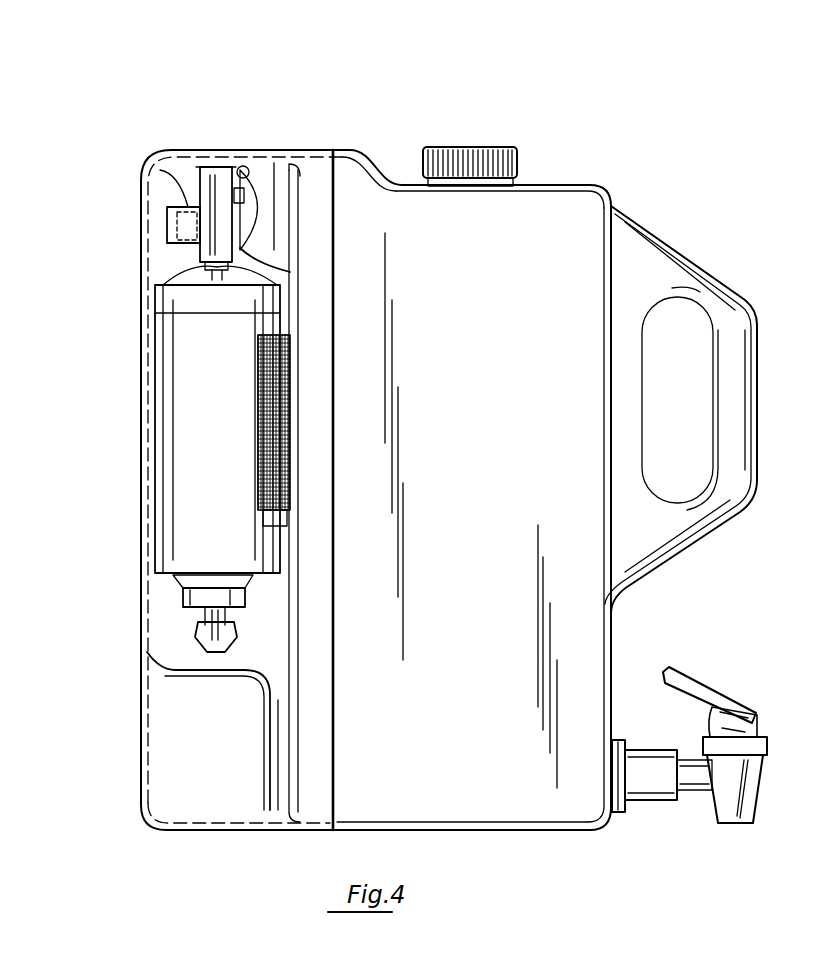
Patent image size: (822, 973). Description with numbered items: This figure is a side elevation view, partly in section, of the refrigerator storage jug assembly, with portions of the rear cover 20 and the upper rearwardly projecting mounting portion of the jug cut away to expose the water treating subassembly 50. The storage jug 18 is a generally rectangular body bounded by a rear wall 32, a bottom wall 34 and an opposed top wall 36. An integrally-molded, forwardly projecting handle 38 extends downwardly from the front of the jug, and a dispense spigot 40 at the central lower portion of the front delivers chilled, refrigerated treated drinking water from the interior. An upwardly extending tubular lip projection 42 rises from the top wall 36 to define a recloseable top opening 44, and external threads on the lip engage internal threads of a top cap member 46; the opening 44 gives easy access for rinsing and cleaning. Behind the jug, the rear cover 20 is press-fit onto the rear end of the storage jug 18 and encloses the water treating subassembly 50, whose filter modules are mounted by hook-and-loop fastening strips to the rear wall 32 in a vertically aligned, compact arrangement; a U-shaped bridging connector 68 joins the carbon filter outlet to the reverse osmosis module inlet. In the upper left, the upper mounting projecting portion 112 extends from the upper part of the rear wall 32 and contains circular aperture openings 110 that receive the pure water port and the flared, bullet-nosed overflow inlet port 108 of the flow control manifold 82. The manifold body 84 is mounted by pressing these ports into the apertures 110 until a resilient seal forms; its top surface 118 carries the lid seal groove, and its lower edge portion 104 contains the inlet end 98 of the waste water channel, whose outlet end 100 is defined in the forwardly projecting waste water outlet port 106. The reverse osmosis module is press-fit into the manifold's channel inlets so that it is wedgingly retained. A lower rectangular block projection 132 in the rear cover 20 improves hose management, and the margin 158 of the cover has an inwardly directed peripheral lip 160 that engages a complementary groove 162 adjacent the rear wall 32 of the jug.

The storage jug 18 is at (557, 258).
The rear cover 20 is at (140, 736).
The rear wall 32 is at (290, 635).
The bottom wall 34 is at (392, 833).
The top wall 36 is at (568, 188).
The handle 38 is at (730, 313).
The dispense spigot 40 is at (738, 785).
The tubular lip projection 42 is at (516, 186).
The top opening 44 is at (448, 142).
The top cap member 46 is at (518, 155).
The water treating subassembly 50 is at (127, 399).
The U-shaped bridging connector 68 is at (205, 637).
The flow control manifold 82 is at (165, 152).
The manifold body 84 is at (202, 257).
The waste water channel inlet end 98 is at (213, 280).
The waste water channel outlet end 100 is at (167, 228).
The lower edge portion 104 is at (165, 286).
The waste water outlet port 106 is at (160, 170).
The overflow inlet port 108 is at (257, 170).
The circular aperture openings 110 is at (235, 165).
The upper mounting projecting portion 112 is at (275, 175).
The top surface 118 is at (212, 166).
The lower rectangular block projection 132 is at (200, 752).
The margin 158 is at (314, 172).
The peripheral lip 160 is at (338, 146).
The groove 162 is at (343, 773).